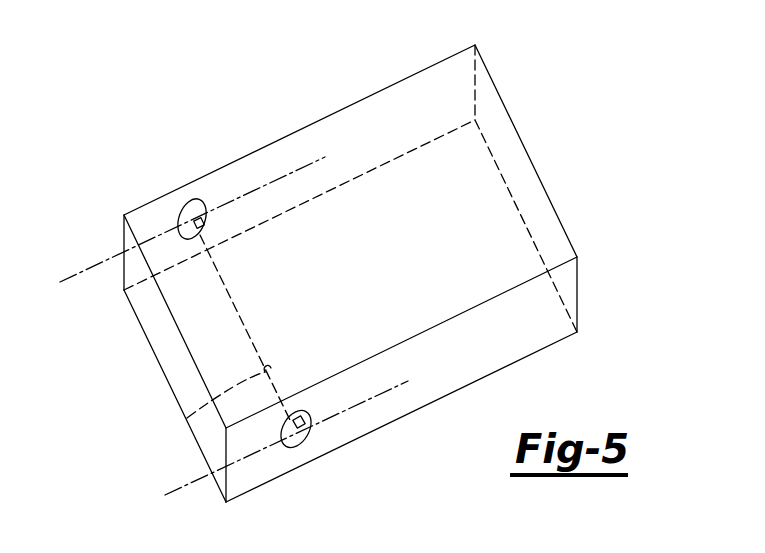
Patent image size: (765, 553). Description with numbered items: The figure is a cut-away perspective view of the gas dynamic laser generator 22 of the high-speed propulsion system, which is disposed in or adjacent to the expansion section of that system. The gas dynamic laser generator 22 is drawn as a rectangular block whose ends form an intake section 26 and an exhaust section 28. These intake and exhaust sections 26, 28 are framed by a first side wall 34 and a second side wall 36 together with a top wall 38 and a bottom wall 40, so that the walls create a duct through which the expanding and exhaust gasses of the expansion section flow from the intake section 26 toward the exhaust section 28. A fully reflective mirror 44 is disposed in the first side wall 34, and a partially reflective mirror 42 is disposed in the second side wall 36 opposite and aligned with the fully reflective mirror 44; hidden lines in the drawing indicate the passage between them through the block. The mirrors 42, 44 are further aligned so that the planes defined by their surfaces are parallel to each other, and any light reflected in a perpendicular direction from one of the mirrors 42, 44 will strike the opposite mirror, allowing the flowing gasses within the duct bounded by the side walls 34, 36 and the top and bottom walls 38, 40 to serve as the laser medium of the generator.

The gas dynamic laser generator 22 is at (381, 78).
The intake section 26 is at (570, 210).
The exhaust section 28 is at (138, 347).
The first side wall 34 is at (508, 342).
The second side wall 36 is at (339, 171).
The top wall 38 is at (492, 130).
The bottom wall 40 is at (187, 418).
The partially reflective mirror 42 is at (207, 198).
The fully reflective mirror 44 is at (310, 443).